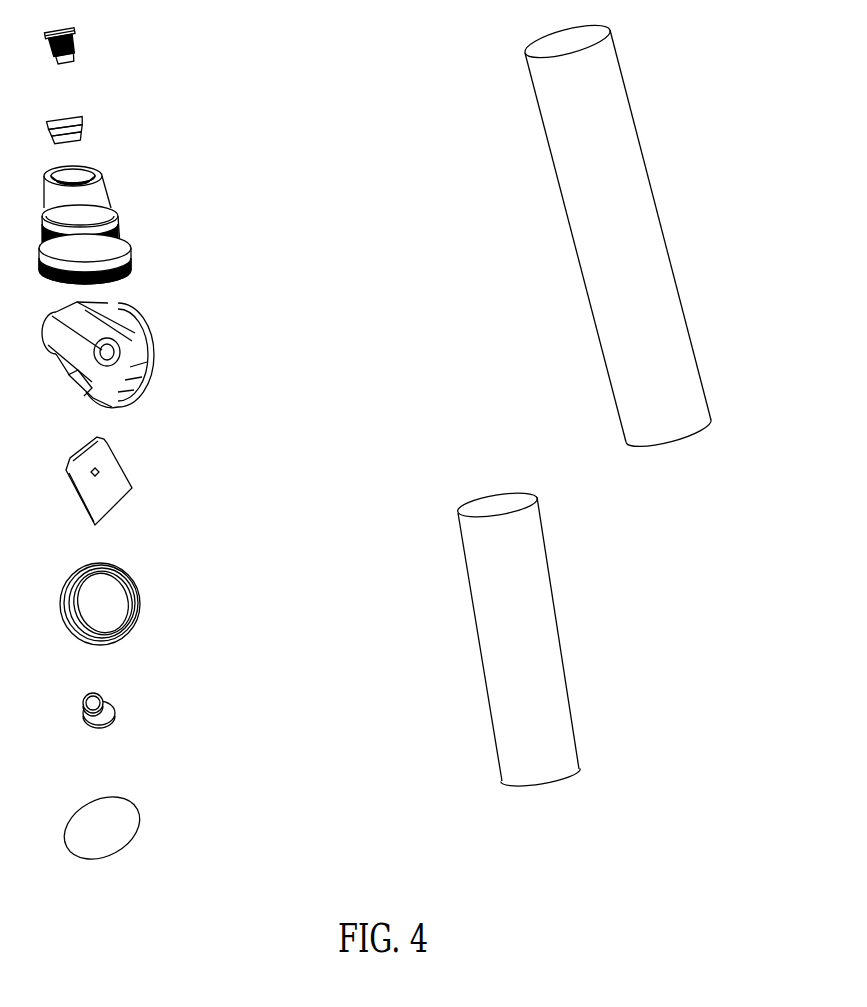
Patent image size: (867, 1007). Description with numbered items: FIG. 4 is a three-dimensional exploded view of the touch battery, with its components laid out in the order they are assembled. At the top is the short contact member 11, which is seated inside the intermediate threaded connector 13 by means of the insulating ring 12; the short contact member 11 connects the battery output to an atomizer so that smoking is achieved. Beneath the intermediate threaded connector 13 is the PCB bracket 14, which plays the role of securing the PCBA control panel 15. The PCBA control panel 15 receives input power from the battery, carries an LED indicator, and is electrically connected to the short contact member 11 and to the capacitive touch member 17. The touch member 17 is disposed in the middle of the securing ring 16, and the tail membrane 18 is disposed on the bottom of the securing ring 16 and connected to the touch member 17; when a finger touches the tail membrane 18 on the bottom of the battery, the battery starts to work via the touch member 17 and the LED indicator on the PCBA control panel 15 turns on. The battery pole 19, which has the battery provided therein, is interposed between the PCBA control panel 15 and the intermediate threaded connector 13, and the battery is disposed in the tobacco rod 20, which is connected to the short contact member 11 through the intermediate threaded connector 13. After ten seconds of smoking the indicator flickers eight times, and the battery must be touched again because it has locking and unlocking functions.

The short contact member 11 is at (248, 46).
The insulating ring 12 is at (176, 120).
The intermediate threaded connector 13 is at (169, 225).
The PCB bracket 14 is at (171, 355).
The PCBA control panel 15 is at (185, 481).
The securing ring 16 is at (177, 604).
The touch member 17 is at (189, 722).
The tail membrane 18 is at (172, 827).
The battery pole 19 is at (545, 640).
The tobacco rod 20 is at (628, 236).